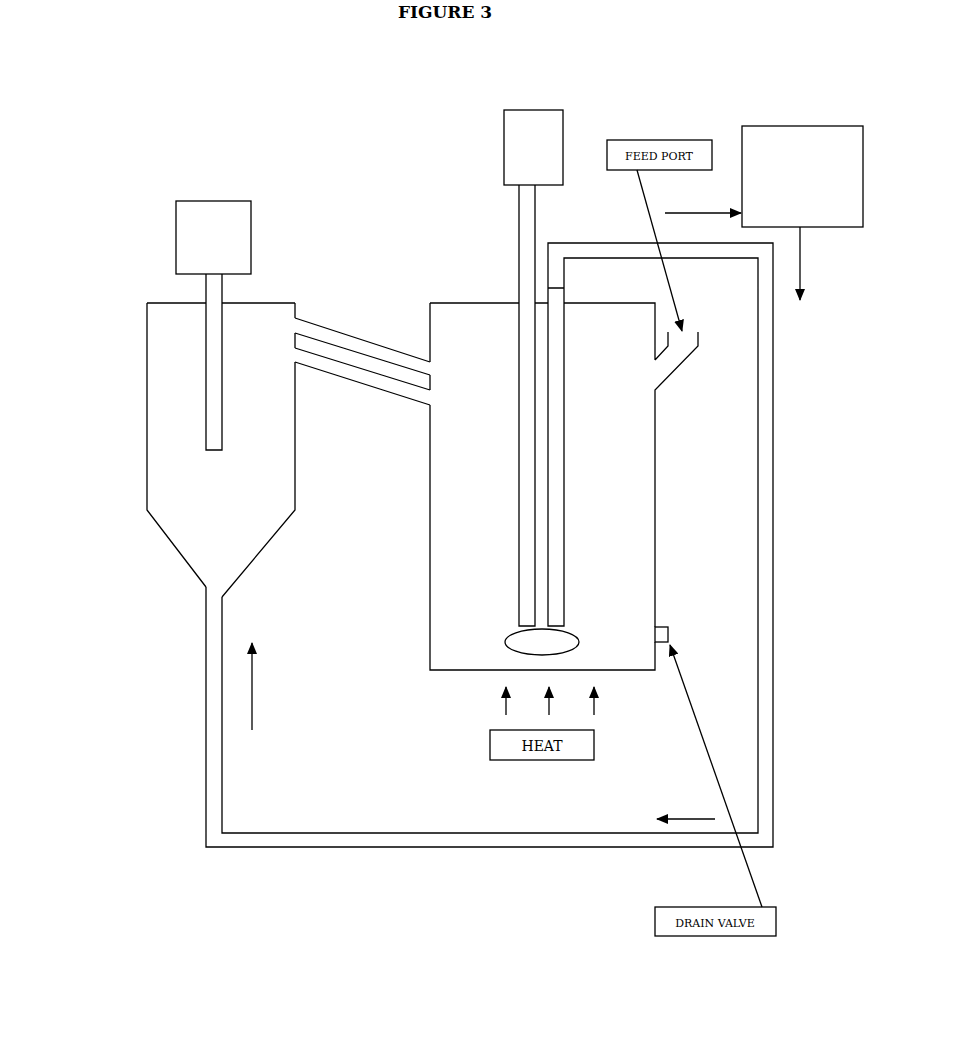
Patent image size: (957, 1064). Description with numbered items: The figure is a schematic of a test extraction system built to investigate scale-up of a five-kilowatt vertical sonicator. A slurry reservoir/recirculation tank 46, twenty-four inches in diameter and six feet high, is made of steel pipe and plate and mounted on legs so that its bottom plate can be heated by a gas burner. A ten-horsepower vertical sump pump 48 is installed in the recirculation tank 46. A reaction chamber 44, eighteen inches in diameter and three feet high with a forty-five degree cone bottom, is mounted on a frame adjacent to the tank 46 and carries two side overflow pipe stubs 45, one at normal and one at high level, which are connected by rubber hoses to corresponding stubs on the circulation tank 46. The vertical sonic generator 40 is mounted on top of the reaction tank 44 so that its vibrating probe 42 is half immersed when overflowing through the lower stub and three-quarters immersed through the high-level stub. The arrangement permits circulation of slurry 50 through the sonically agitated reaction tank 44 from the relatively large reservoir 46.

The vertical sonic generator 40 is at (206, 200).
The vibrating probe 42 is at (205, 393).
The reaction chamber 44 is at (175, 541).
The side overflow pipe stubs 45 is at (396, 367).
The slurry reservoir/recirculation tank 46 is at (656, 438).
The vertical sump pump 48 is at (564, 110).
The slurry 50 is at (764, 213).